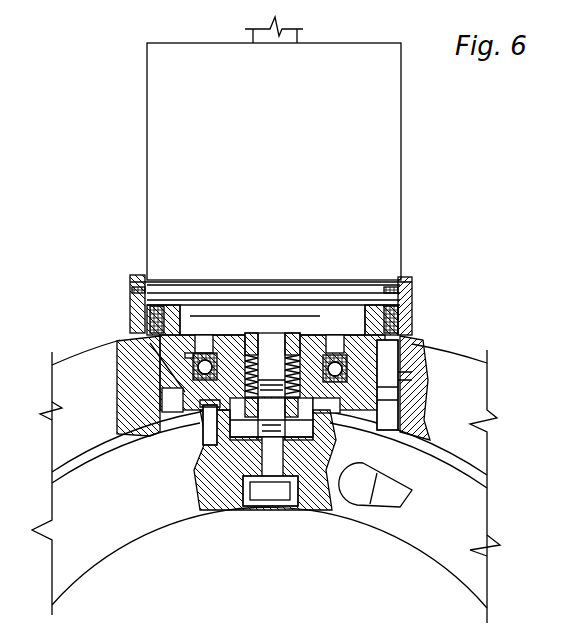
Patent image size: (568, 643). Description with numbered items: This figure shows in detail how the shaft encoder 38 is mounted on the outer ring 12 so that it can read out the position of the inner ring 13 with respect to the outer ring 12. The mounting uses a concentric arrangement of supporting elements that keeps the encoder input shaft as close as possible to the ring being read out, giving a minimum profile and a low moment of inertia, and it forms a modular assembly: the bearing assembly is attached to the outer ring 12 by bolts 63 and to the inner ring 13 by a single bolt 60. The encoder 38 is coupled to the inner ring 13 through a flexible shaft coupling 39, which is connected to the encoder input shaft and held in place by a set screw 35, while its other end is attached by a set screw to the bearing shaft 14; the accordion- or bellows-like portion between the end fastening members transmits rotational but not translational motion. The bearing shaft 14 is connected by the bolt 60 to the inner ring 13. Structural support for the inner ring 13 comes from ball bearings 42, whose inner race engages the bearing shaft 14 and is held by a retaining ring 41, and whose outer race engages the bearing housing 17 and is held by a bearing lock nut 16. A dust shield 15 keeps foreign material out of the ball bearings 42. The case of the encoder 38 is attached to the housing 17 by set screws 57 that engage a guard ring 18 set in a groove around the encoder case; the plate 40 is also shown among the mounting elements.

The outer ring 12 is at (87, 357).
The inner ring 13 is at (143, 533).
The bearing shaft 14 is at (317, 427).
The dust shield 15 is at (185, 392).
The bearing lock nut 16 is at (412, 328).
The bearing housing 17 is at (410, 280).
The guard ring 18 is at (270, 294).
The set screw 35 is at (314, 350).
The encoder 38 is at (401, 148).
The flexible shaft coupling 39 is at (247, 335).
The top plate 40 is at (224, 290).
The retaining ring 41 is at (340, 356).
The ball bearings 42 is at (400, 367).
The set screws 57 is at (413, 306).
The bolt 60 is at (256, 497).
The bolts 63 is at (405, 376).